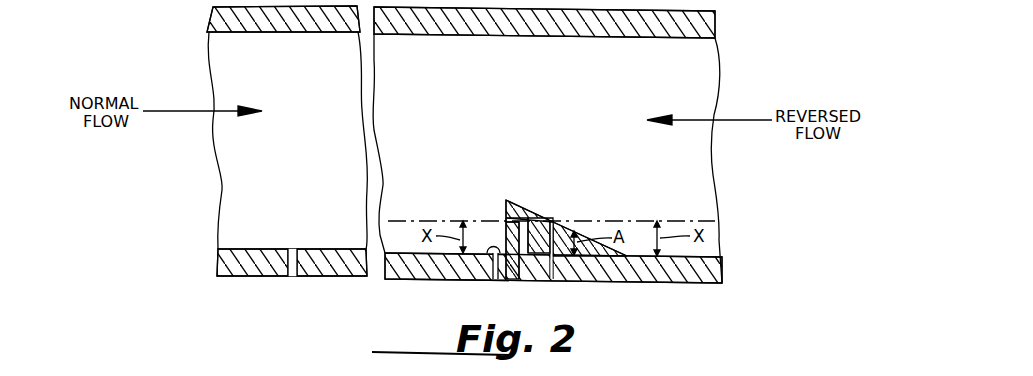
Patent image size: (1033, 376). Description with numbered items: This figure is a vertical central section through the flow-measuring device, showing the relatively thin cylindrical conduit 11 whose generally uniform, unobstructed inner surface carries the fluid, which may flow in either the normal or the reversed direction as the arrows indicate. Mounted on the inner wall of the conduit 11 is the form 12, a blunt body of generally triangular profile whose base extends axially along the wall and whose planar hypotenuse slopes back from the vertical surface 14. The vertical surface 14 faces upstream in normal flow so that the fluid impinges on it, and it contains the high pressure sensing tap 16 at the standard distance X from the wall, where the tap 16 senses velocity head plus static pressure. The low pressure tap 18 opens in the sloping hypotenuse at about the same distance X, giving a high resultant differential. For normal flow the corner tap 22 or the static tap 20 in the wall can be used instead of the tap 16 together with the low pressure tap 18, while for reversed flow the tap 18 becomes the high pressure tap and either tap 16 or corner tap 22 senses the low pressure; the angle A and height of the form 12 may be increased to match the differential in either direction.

The conduit 11 is at (673, 272).
The form 12 is at (527, 216).
The vertical surface 14 is at (506, 212).
The high pressure sensing tap 16 is at (506, 217).
The low pressure tap 18 is at (554, 221).
The static tap 20 is at (292, 250).
The corner tap 22 is at (487, 255).